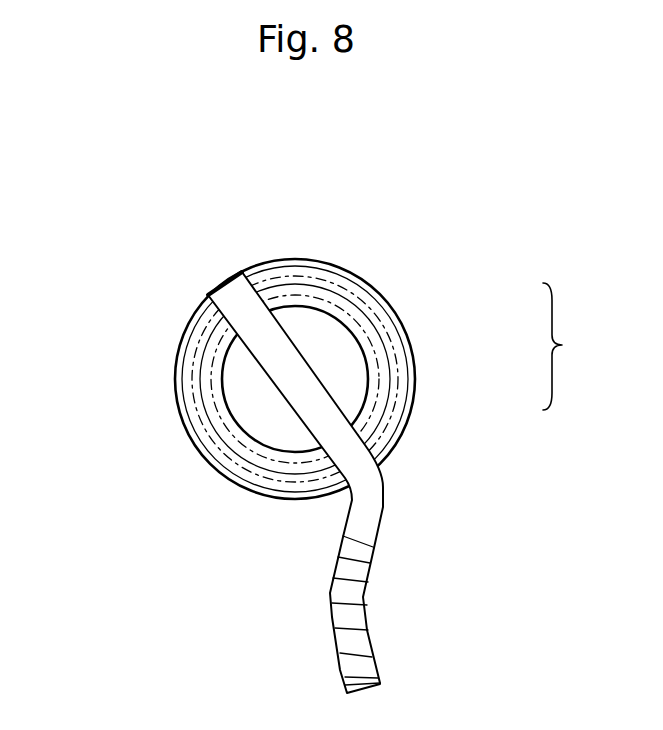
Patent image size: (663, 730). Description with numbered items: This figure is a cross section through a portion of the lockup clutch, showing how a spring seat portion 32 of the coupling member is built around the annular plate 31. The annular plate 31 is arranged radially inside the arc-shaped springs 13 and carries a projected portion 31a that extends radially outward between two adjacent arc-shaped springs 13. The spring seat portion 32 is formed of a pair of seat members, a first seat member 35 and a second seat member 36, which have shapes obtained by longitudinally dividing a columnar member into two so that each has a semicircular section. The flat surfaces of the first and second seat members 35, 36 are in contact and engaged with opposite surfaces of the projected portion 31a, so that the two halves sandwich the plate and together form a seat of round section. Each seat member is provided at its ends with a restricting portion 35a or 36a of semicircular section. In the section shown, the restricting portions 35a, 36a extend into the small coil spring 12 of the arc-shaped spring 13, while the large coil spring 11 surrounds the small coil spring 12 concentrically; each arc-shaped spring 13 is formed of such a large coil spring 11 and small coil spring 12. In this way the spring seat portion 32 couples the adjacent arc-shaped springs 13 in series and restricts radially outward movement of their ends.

The large coil spring 11 is at (402, 360).
The small coil spring 12 is at (380, 407).
The arc-shaped spring 13 is at (569, 346).
The annular plate 31 is at (392, 595).
The projected portion 31a is at (278, 332).
The spring seat portion 32 is at (312, 242).
The first seat member 35 is at (376, 284).
The restricting portion 35a is at (299, 323).
The second seat member 36 is at (185, 438).
The restricting portion 36a is at (232, 373).